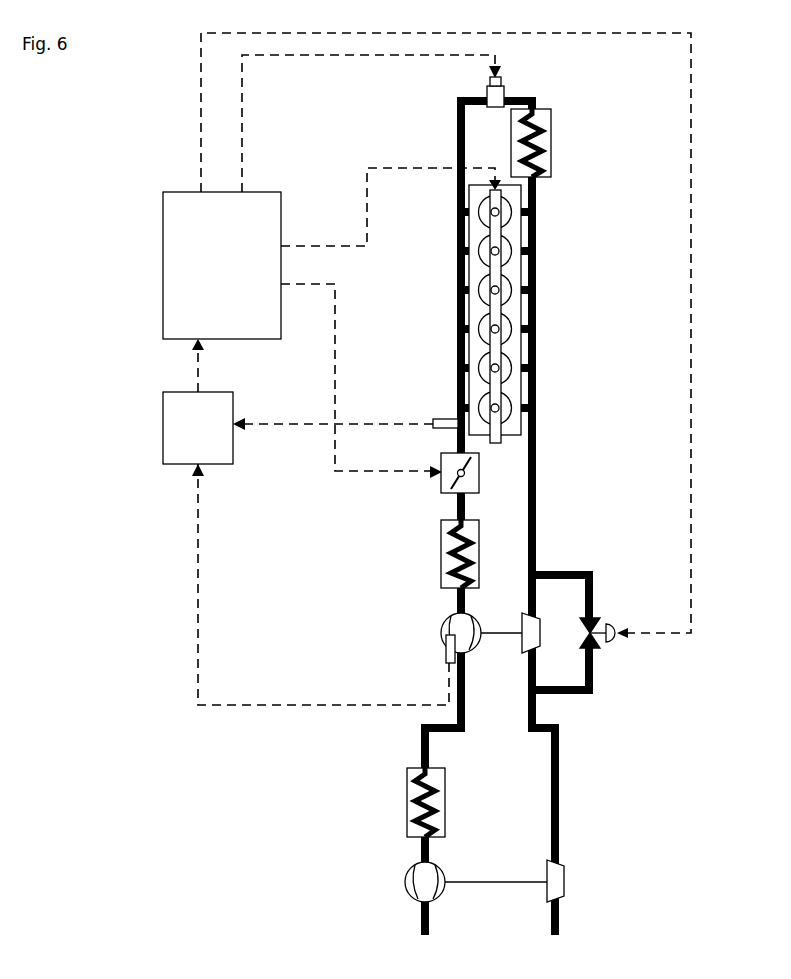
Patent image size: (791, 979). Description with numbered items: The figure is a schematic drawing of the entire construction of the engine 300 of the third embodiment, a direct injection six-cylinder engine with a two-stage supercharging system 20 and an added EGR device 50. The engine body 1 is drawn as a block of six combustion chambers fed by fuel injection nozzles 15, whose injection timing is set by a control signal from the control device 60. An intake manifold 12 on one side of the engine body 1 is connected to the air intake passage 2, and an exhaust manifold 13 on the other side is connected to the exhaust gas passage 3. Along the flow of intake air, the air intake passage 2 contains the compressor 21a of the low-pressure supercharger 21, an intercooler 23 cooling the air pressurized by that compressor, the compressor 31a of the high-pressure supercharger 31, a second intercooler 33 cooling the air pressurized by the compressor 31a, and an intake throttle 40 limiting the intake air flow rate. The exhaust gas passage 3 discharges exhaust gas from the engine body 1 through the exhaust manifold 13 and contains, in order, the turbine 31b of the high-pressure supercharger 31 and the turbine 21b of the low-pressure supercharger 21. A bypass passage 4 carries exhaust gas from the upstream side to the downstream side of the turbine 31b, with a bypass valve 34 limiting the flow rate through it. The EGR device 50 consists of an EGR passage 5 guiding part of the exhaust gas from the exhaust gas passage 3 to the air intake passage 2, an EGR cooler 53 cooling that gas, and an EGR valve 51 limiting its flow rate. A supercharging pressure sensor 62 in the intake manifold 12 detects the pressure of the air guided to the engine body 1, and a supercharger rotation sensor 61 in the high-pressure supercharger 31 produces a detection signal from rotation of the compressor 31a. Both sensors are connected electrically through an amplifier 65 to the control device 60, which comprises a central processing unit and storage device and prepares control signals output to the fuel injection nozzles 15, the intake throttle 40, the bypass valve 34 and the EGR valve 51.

The engine 300 is at (718, 80).
The engine body 1 is at (496, 311).
The air intake passage 2 is at (447, 437).
The exhaust gas passage 3 is at (540, 437).
The bypass passage 4 is at (608, 632).
The EGR passage 5 is at (453, 123).
The intake manifold 12 is at (443, 314).
The exhaust manifold 13 is at (545, 314).
The fuel injection nozzles 15 is at (499, 212).
The two-stage supercharging system 20 is at (508, 831).
The low-pressure supercharger 21 is at (457, 897).
The compressor 21a is at (405, 885).
The turbine 21b is at (565, 884).
The intercooler 23 is at (407, 810).
The high-pressure supercharger 31 is at (469, 672).
The compressor 31a is at (446, 636).
The turbine 31b is at (540, 650).
The intercooler 33 is at (441, 555).
The bypass valve 34 is at (620, 643).
The intake throttle 40 is at (441, 485).
The EGR device 50 is at (526, 120).
The EGR valve 51 is at (487, 92).
The EGR cooler 53 is at (551, 138).
The control device 60 is at (224, 282).
The supercharger rotation sensor 61 is at (447, 660).
The supercharging pressure sensor 62 is at (440, 418).
The amplifier 65 is at (204, 446).